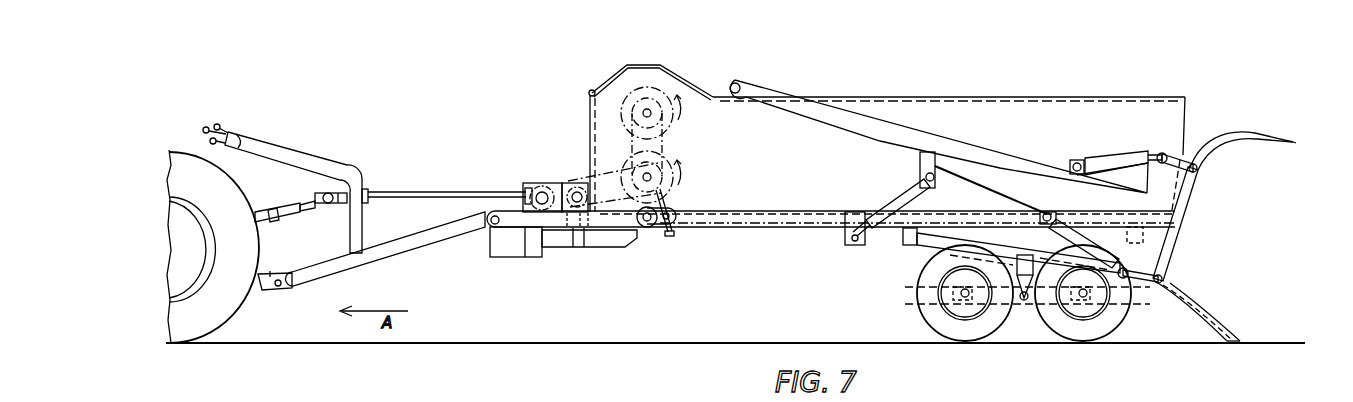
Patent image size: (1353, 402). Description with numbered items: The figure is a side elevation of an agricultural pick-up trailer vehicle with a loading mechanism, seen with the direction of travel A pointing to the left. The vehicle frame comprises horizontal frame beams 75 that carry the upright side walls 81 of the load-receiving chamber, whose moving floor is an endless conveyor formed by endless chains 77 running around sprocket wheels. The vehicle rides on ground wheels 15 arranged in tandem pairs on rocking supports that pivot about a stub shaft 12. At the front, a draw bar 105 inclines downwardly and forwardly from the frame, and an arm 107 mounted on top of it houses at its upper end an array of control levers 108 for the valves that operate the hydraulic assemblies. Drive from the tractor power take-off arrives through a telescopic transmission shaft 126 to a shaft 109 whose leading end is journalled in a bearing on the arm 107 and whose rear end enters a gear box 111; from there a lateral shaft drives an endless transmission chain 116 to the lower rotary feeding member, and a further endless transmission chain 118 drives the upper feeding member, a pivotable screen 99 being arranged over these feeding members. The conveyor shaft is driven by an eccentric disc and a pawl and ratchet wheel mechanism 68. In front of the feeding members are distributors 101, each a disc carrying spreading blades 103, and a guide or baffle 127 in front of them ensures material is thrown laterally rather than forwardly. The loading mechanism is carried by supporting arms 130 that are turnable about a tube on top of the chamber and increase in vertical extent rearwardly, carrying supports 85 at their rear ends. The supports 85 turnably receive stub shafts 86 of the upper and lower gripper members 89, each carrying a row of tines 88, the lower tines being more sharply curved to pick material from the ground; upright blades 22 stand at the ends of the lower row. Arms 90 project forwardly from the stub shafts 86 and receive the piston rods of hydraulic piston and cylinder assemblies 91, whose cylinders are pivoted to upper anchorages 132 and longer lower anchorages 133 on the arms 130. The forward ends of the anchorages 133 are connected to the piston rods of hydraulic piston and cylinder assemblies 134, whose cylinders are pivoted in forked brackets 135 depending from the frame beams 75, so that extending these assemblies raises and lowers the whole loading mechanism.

The stub shaft 12 is at (1024, 303).
The ground wheels 15 is at (925, 316).
The upright blades 22 is at (1195, 313).
The pawl and ratchet wheel mechanism 68 is at (651, 232).
The frame beams 75 is at (515, 223).
The endless chains 77 is at (740, 210).
The side walls 81 is at (980, 105).
The supports 85 is at (1180, 248).
The stub shafts 86 is at (1200, 170).
The tines 88 is at (1293, 142).
The gripper members 89 is at (1271, 127).
The arms 90 is at (1178, 153).
The hydraulic piston and cylinder assemblies 91 is at (1058, 228).
The pivotable screen 99 is at (638, 65).
The distributors 101 is at (617, 249).
The spreading blades 103 is at (577, 248).
The draw bar 105 is at (387, 256).
The arm 107 is at (317, 166).
The control levers 108 is at (255, 137).
The shaft 109 is at (413, 194).
The gear box 111 is at (525, 182).
The endless transmission chain 116 is at (570, 180).
The endless transmission chain 118 is at (664, 145).
The telescopic transmission shaft 126 is at (269, 210).
The guide or baffle 127 is at (510, 258).
The supporting arms 130 is at (882, 126).
The anchorages 132 is at (1063, 160).
The anchorages 133 is at (965, 187).
The hydraulic piston and cylinder assemblies 134 is at (893, 189).
The forked brackets 135 is at (847, 246).